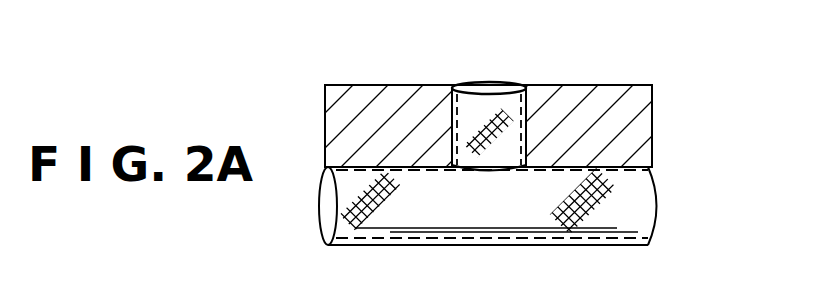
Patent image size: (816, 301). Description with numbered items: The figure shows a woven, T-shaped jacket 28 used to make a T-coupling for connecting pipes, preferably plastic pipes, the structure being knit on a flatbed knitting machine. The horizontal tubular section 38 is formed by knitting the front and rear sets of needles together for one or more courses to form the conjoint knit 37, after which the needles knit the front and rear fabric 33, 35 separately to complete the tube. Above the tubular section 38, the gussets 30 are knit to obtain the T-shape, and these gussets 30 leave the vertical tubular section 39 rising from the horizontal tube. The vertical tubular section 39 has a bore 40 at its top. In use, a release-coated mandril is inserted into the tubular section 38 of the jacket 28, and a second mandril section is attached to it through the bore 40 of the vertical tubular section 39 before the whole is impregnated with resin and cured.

The jacket 28 is at (661, 162).
The gussets 30 is at (637, 100).
The front fabric 33 is at (327, 202).
The rear fabric 35 is at (404, 210).
The conjoint knit 37 is at (560, 246).
The tubular section 38 is at (640, 196).
The vertical tubular section 39 is at (507, 112).
The bore 40 is at (486, 89).